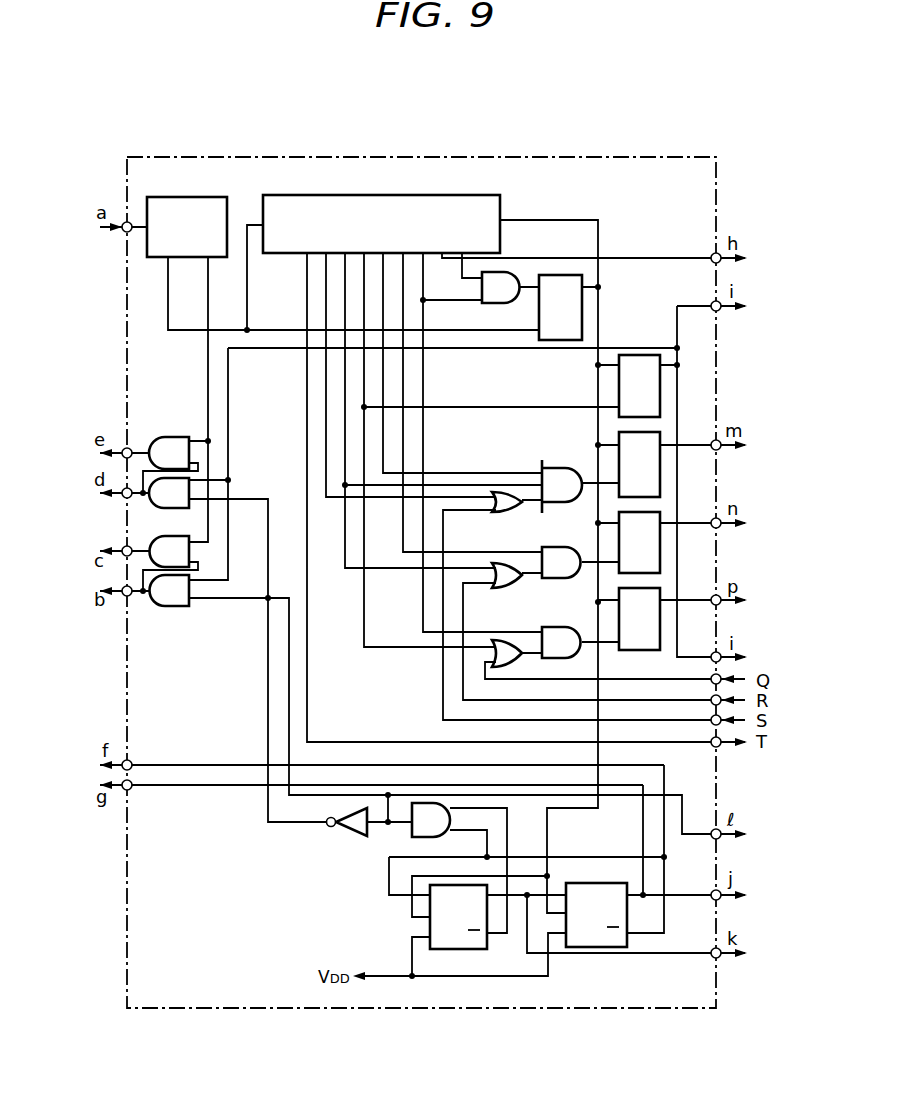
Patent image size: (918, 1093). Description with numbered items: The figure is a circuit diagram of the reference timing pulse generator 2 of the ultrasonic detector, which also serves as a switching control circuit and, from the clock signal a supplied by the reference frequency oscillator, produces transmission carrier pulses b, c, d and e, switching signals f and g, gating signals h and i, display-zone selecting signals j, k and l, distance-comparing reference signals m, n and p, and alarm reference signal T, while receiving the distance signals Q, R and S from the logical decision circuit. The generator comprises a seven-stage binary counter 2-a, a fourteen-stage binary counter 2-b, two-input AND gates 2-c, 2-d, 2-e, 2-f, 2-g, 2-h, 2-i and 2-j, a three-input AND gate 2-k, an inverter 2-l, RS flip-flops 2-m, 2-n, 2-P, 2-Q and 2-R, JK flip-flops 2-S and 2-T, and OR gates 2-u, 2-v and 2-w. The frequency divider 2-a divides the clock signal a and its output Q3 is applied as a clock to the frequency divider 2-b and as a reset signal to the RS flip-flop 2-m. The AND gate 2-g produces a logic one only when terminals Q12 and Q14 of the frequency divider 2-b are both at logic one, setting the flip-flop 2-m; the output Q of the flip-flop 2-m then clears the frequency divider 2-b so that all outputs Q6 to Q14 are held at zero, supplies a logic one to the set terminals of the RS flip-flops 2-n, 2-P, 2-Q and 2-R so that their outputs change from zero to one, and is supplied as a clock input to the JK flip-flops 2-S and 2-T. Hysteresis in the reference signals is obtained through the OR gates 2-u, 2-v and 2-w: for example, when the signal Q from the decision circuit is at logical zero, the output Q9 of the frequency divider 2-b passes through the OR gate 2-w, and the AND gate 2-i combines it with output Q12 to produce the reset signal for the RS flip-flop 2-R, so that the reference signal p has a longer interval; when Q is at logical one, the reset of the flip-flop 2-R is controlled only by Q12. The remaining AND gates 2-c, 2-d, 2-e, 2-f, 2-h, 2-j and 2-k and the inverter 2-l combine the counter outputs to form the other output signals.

The reference timing pulse generator 2 is at (513, 157).
The 7-stage binary counter 2-a is at (178, 197).
The 14-stage binary counter 2-b is at (307, 195).
The AND gate 2-c is at (168, 437).
The AND gate 2-d is at (162, 505).
The AND gate 2-e is at (162, 538).
The AND gate 2-f is at (171, 606).
The AND gate 2-g is at (496, 303).
The AND gate 2-h is at (558, 547).
The AND gate 2-i is at (552, 627).
The AND gate 2-j is at (423, 837).
The AND gate 2-k is at (557, 468).
The inverter 2-l is at (355, 834).
The RS flip-flop 2-m is at (553, 275).
The RS flip-flop 2-n is at (631, 355).
The RS flip-flop 2-P is at (661, 432).
The RS flip-flop 2-Q is at (661, 512).
The RS flip-flop 2-R is at (661, 588).
The JK flip-flop 2-S is at (441, 949).
The JK flip-flop 2-T is at (581, 947).
The OR gate 2-u is at (501, 492).
The OR gate 2-v is at (501, 563).
The OR gate 2-w is at (501, 640).